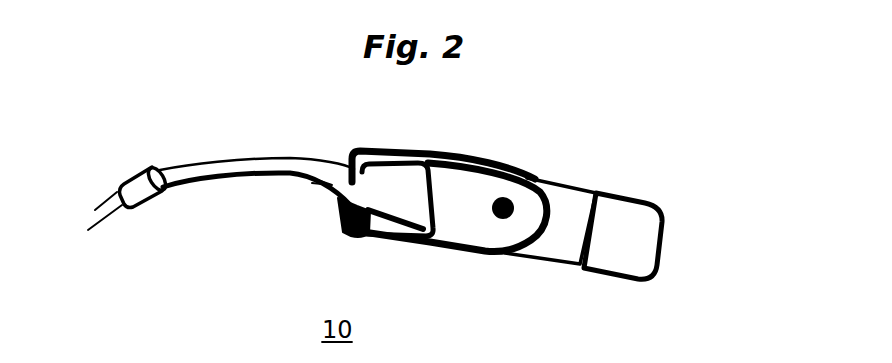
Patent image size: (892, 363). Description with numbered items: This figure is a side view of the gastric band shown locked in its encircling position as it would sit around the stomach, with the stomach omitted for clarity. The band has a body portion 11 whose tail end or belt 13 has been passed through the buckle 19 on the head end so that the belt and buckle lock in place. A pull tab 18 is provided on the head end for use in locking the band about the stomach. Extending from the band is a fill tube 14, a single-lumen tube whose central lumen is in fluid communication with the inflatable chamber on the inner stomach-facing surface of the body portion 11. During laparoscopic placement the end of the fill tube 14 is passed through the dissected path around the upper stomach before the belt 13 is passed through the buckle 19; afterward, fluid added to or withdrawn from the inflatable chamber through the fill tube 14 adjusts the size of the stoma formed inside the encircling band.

The body portion 11 is at (667, 238).
The tail end or belt 13 is at (538, 265).
The fill tube 14 is at (223, 178).
The pull tab 18 is at (523, 178).
The buckle 19 is at (453, 155).